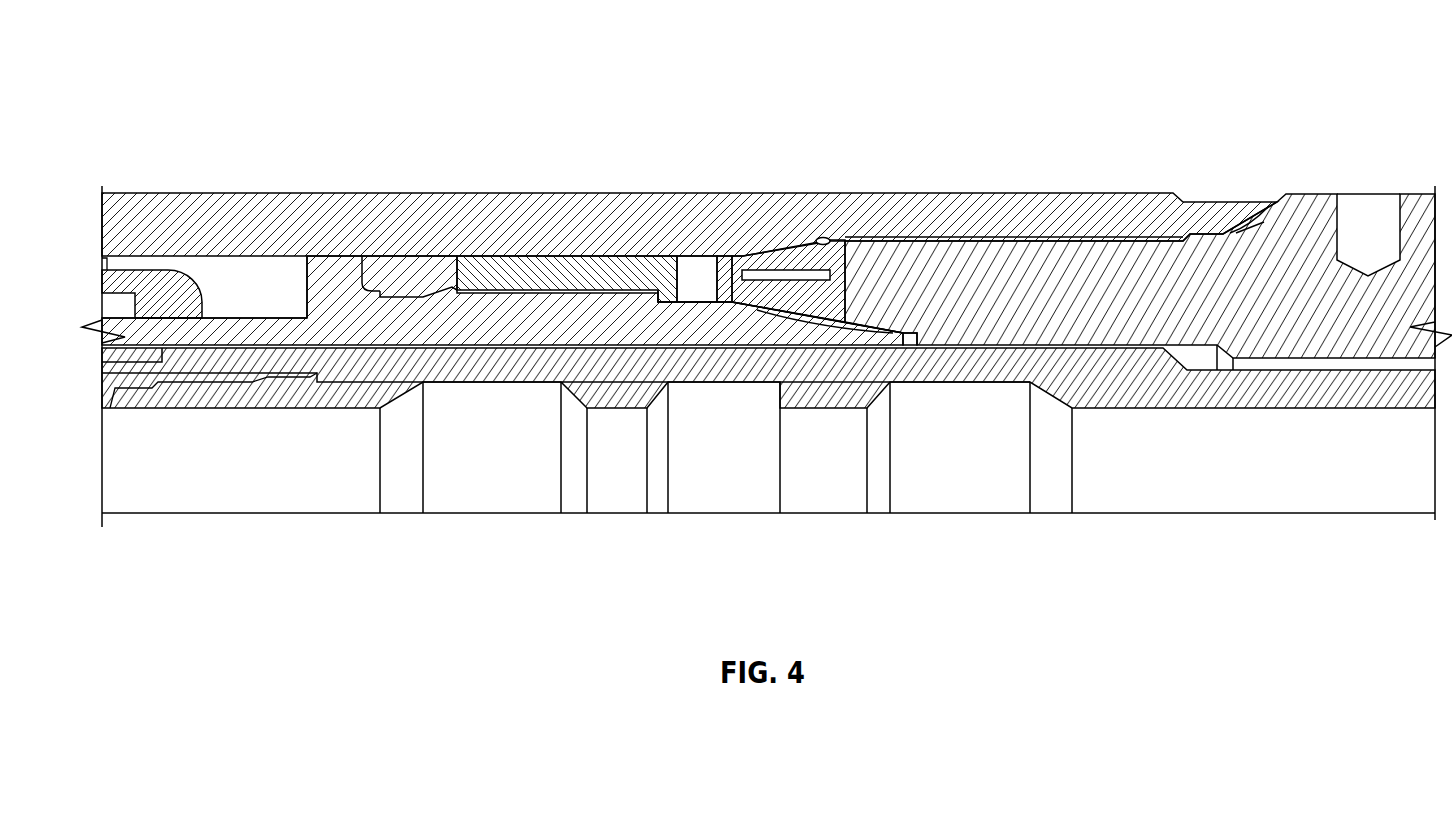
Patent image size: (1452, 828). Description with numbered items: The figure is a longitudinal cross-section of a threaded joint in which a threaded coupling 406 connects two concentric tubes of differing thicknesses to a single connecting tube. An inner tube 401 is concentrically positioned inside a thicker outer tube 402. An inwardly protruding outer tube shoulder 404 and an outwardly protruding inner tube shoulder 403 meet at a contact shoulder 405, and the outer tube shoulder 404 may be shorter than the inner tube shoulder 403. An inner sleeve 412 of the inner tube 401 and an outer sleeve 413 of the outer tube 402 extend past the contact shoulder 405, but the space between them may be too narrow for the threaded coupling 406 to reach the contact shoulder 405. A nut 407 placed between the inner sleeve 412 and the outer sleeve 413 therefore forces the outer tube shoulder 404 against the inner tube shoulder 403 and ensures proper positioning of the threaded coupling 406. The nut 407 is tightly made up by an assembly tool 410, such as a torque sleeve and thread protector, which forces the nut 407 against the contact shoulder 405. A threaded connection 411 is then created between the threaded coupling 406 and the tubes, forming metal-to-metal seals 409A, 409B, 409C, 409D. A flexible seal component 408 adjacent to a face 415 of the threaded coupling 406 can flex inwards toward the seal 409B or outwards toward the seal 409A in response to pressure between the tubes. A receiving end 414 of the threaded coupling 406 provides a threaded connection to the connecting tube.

The inner tube 401 is at (165, 325).
The outer tube 402 is at (162, 218).
The inner tube shoulder 403 is at (322, 277).
The outer tube shoulder 404 is at (410, 280).
The contact shoulder 405 is at (357, 256).
The threaded coupling 406 is at (933, 270).
The nut 407 is at (528, 280).
The flexible seal component 408 is at (847, 223).
The seal 409A is at (768, 240).
The seal 409B is at (763, 317).
The seal 409C is at (900, 340).
The seal 409D is at (1255, 202).
The assembly tool 410 is at (697, 277).
The threaded connection 411 is at (805, 323).
The inner sleeve 412 is at (453, 320).
The outer sleeve 413 is at (600, 217).
The receiving end 414 is at (1303, 335).
The face 415 is at (732, 303).